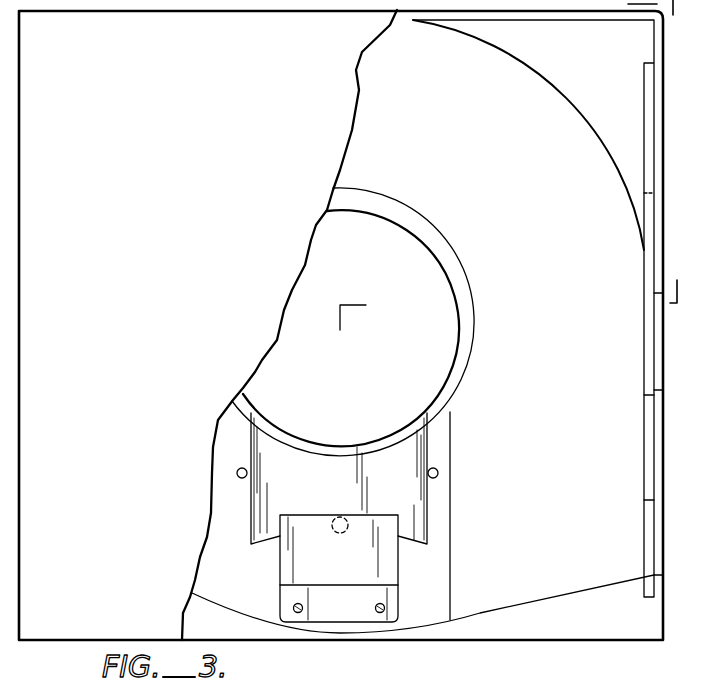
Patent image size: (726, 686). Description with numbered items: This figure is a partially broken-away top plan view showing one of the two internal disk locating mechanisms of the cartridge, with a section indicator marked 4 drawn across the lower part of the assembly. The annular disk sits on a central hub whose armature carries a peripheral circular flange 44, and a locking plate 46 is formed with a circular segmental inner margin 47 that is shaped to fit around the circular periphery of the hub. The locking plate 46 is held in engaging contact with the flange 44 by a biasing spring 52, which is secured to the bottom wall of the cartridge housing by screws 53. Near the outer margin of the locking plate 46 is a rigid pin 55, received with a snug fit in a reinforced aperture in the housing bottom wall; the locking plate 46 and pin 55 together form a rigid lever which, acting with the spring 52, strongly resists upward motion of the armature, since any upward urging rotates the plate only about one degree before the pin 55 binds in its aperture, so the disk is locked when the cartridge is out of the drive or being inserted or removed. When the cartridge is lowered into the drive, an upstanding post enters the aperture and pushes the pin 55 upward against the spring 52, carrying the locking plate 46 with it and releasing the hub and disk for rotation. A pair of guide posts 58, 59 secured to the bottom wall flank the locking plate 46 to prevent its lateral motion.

The section line 4- 4 is at (342, 633).
The peripheral circular flange 44 is at (453, 396).
The locking plate 46 is at (333, 470).
The circular segmental inner margin 47 is at (310, 421).
The biasing spring 52 is at (388, 556).
The screws 53 is at (298, 614).
The rigid pin 55 is at (333, 516).
The guide post 58 is at (237, 473).
The guide post 59 is at (438, 473).